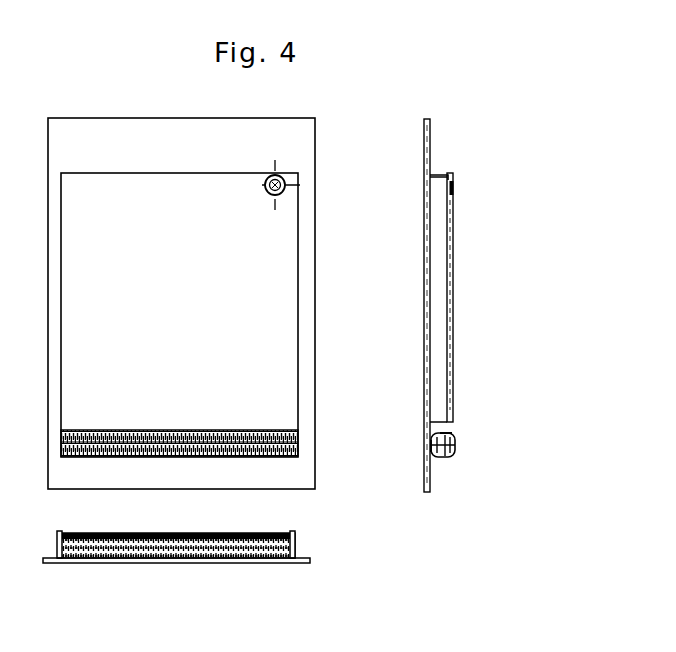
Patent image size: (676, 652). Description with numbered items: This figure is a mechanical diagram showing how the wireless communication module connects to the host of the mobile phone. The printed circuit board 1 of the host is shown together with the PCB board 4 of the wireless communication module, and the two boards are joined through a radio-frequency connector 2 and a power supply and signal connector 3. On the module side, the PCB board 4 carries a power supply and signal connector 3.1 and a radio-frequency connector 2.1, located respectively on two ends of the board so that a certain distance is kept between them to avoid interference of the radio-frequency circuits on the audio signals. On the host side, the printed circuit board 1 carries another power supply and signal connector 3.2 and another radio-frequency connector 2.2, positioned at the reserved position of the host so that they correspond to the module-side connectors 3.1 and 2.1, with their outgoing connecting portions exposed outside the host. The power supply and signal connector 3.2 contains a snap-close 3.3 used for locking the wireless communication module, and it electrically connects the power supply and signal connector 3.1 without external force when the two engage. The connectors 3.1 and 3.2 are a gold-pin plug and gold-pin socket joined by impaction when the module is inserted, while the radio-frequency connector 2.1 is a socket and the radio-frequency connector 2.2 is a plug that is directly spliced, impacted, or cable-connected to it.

The printed circuit board of the host 1 is at (287, 142).
The radio-frequency connector 2 is at (297, 193).
The radio-frequency connector 2.1 is at (513, 213).
The radio-frequency connector 2.2 is at (447, 172).
The power supply and signal connector 3 is at (297, 440).
The power supply and signal connector 3.1 is at (447, 432).
The power supply and signal connector 3.2 is at (427, 437).
The snap-close 3.3 is at (297, 535).
The PCB board of the wireless communication module 4 is at (450, 277).